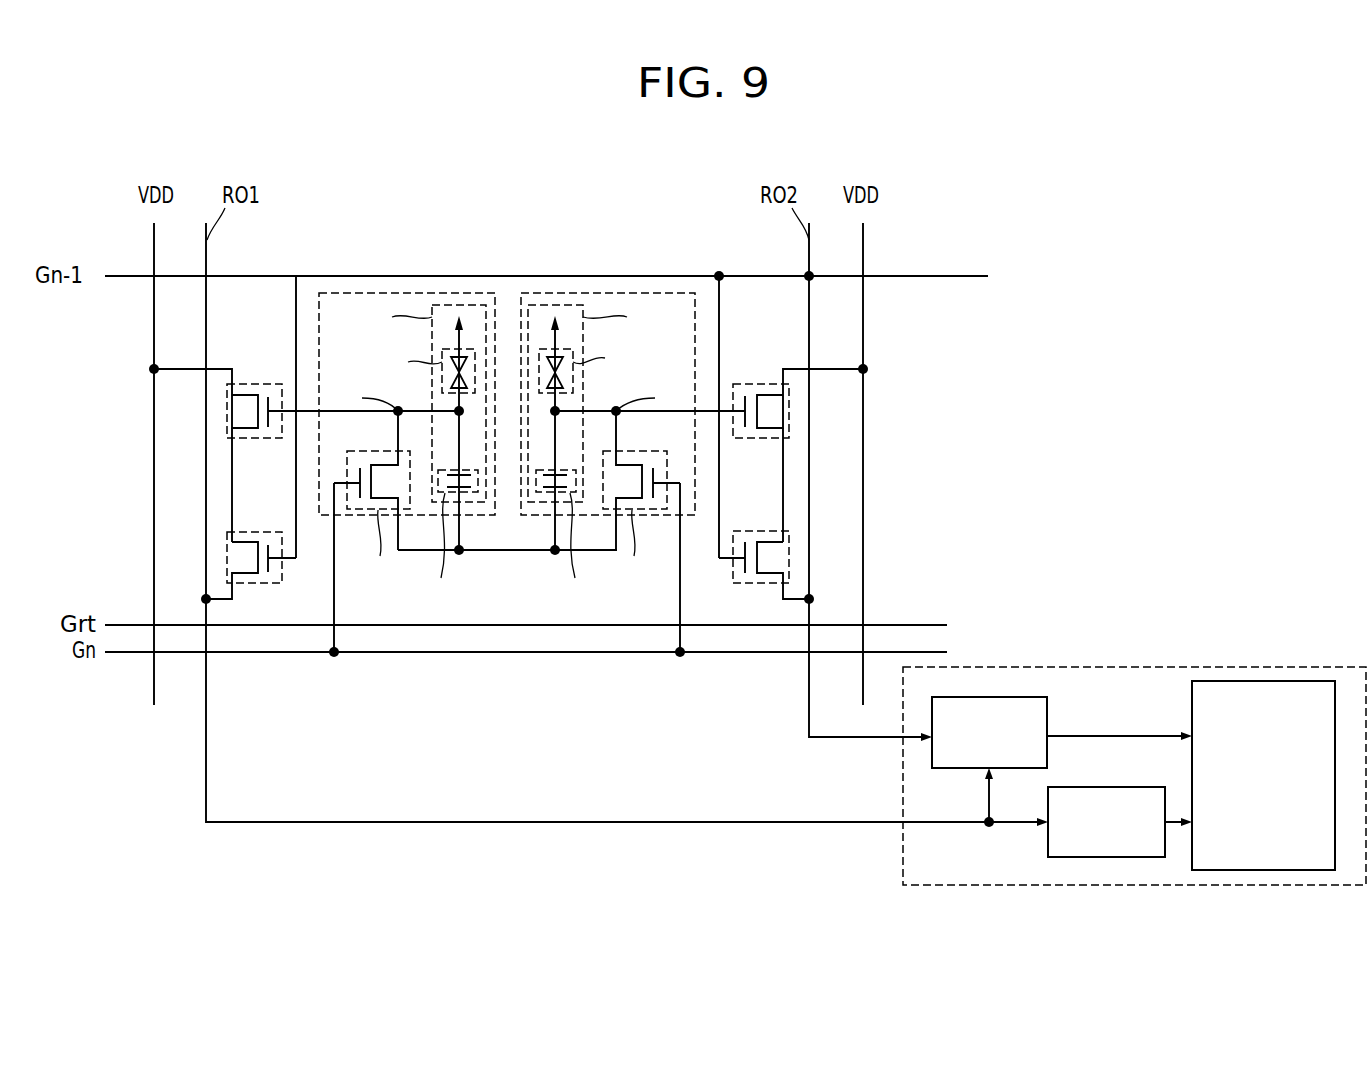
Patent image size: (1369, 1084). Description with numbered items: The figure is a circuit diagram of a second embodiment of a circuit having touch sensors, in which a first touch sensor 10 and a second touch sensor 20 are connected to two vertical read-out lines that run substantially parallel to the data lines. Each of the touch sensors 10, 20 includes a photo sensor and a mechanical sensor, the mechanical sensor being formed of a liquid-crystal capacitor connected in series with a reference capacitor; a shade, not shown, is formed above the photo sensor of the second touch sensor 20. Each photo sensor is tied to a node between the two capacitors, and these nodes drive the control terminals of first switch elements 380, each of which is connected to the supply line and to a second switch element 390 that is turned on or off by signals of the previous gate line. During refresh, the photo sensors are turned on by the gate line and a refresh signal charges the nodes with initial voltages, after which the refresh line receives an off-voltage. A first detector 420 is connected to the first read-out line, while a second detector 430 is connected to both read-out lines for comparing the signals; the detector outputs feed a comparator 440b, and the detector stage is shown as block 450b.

The touch sensor 10 is at (402, 293).
The touch sensor 20 is at (613, 293).
The first switch element 380 is at (227, 412).
The second switch element 390 is at (227, 557).
The first detector 420 is at (1105, 787).
The second detector 430 is at (987, 697).
The comparator 440b is at (1262, 681).
The detecting unit 450b is at (1133, 667).